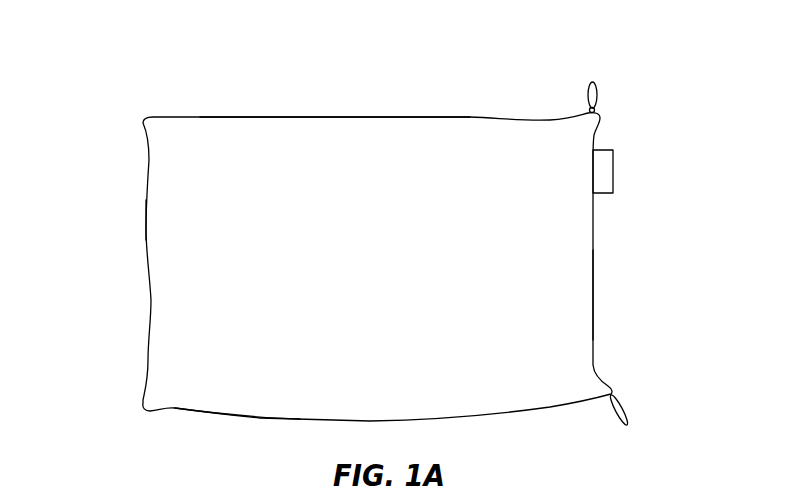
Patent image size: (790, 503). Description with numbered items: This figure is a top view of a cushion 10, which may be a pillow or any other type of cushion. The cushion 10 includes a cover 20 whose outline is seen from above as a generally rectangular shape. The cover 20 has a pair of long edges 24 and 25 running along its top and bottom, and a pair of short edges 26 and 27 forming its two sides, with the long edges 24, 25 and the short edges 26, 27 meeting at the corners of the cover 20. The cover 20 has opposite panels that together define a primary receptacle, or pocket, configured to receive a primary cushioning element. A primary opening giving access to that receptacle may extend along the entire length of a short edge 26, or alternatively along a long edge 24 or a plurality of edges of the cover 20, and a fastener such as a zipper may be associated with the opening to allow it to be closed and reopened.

The cushion 10 is at (104, 121).
The cover 20 is at (574, 235).
The long edge 24 is at (484, 117).
The long edge 25 is at (258, 420).
The short edge 26 is at (594, 297).
The short edge 27 is at (144, 232).